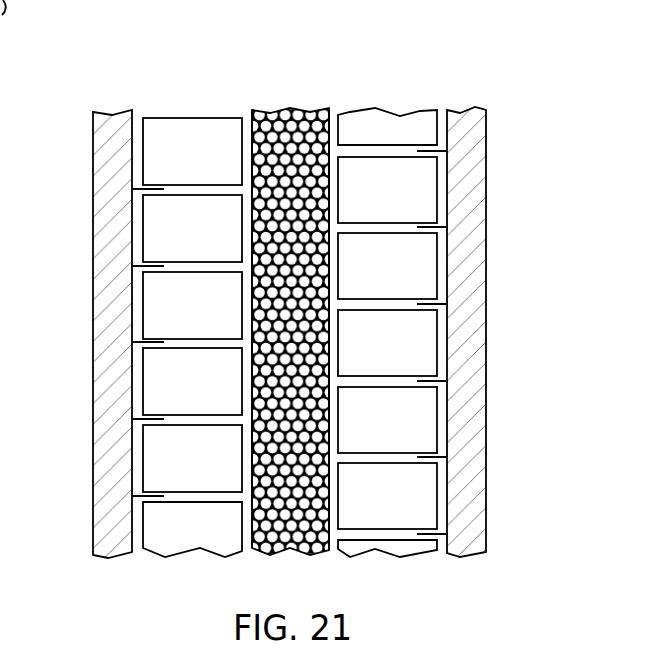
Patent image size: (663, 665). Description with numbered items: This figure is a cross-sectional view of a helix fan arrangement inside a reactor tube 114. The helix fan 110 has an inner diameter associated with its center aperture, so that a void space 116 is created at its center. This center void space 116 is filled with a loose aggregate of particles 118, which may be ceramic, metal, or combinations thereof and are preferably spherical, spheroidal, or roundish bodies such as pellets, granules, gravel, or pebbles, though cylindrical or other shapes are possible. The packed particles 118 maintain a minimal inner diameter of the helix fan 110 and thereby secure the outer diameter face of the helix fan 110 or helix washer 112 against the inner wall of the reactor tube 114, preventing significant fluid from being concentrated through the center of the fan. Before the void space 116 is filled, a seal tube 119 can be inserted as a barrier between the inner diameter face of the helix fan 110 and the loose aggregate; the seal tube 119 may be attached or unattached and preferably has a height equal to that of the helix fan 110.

The helix fan 110 is at (153, 152).
The helix washer 112 is at (137, 191).
The reactor tube 114 is at (103, 357).
The void space 116 is at (248, 120).
The particles 118 is at (282, 119).
The seal tube 119 is at (333, 118).